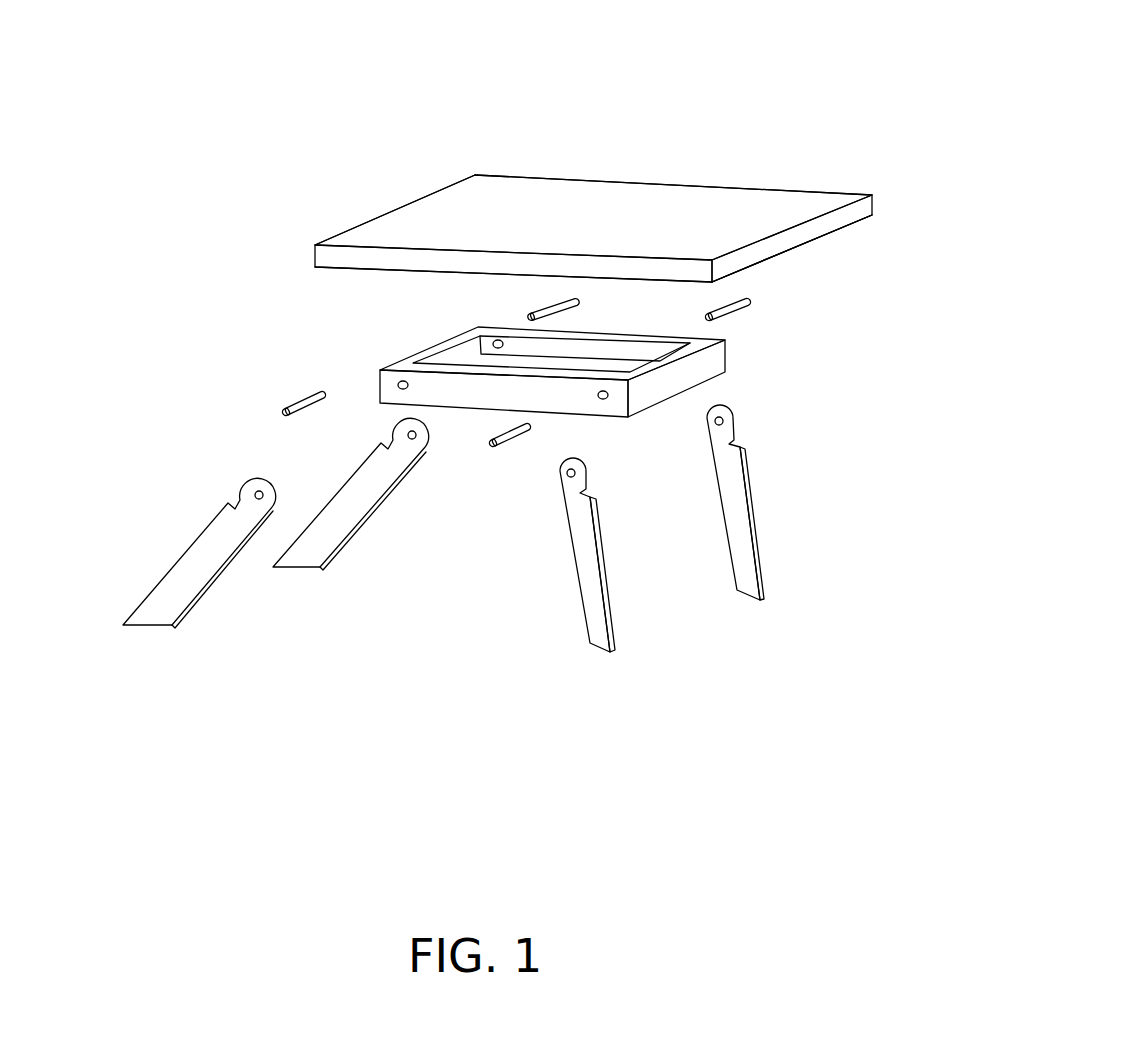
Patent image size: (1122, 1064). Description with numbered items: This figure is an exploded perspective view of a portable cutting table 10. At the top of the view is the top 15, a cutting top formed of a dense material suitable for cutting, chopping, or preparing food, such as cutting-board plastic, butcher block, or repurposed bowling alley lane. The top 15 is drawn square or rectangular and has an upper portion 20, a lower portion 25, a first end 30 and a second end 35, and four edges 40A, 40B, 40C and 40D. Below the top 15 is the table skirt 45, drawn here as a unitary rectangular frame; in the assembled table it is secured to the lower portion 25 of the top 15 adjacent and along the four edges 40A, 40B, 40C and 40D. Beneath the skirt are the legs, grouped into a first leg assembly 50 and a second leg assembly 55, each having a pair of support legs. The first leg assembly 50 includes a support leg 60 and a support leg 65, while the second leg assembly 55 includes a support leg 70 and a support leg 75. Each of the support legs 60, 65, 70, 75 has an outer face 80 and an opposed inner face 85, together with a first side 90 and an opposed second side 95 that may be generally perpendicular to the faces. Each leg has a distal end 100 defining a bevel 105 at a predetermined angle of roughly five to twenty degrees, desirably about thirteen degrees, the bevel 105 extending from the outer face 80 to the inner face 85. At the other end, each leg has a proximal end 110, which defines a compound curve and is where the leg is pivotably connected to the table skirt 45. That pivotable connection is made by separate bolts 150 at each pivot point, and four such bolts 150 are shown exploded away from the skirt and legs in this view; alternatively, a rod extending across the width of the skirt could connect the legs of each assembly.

The portable cutting table 10 is at (893, 71).
The top 15 is at (573, 232).
The upper portion 20 is at (788, 200).
The lower portion 25 is at (818, 268).
The first end 30 is at (377, 120).
The second end 35 is at (920, 172).
The edge 40A is at (850, 218).
The edge 40B is at (362, 260).
The edge 40C is at (380, 215).
The edge 40D is at (608, 182).
The table skirt 45 is at (722, 360).
The first leg assembly 50 is at (93, 413).
The second leg assembly 55 is at (877, 448).
The support leg 60 is at (204, 588).
The support leg 65 is at (352, 531).
The support leg 70 is at (582, 590).
The support leg 75 is at (732, 538).
The outer face 80 is at (153, 592).
The inner face 85 is at (233, 555).
The first side 90 is at (208, 535).
The second side 95 is at (200, 598).
The distal end 100 is at (180, 702).
The bevel 105 is at (150, 627).
The proximal end 110 is at (230, 404).
The bolt 150 is at (578, 303).